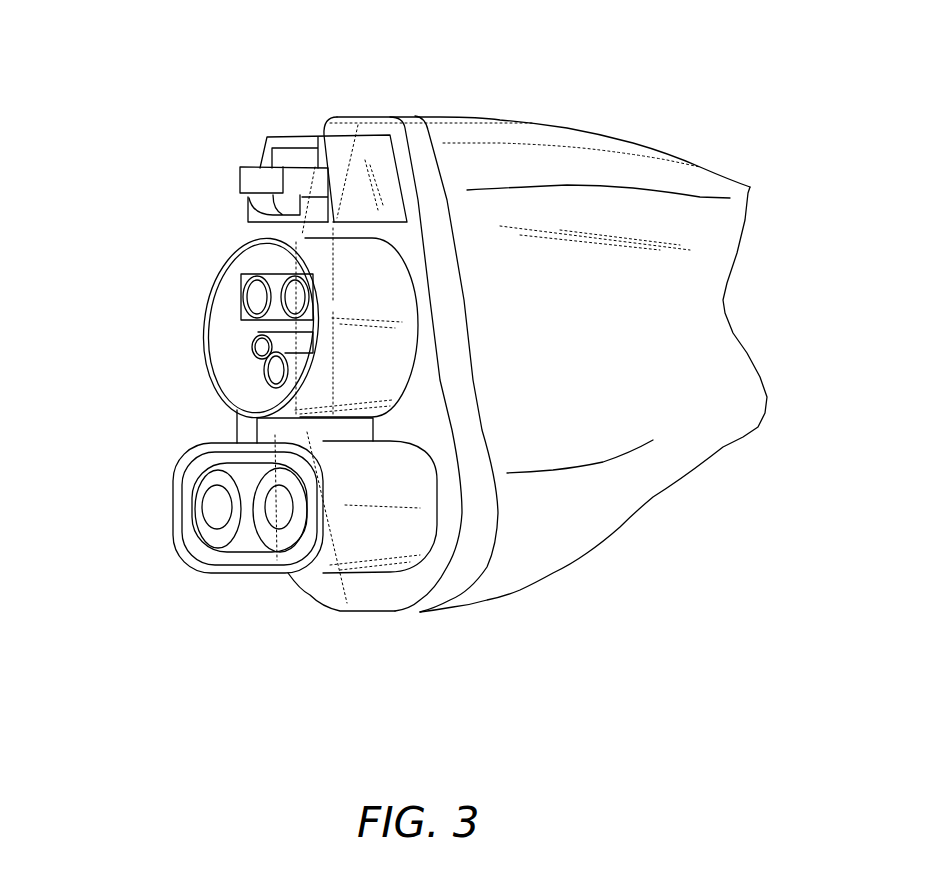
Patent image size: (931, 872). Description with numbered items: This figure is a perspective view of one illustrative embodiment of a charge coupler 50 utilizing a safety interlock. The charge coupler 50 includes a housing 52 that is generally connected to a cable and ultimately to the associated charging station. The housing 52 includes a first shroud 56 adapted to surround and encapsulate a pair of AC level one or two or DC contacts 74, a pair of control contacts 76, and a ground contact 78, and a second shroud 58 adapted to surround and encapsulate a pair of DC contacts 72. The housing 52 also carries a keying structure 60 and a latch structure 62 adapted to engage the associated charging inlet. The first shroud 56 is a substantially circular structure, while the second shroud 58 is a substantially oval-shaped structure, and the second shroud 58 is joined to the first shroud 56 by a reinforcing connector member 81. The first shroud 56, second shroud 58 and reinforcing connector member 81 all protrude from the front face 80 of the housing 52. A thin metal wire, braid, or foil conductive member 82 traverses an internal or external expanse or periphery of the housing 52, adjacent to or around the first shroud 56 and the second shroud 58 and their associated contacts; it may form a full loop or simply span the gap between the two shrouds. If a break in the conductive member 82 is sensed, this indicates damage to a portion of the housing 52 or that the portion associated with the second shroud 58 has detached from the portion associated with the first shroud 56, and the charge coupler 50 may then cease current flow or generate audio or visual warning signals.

The charge coupler 50 is at (593, 101).
The housing 52 is at (503, 96).
The first shroud 56 is at (172, 326).
The second shroud 58 is at (159, 463).
The keying structure 60 is at (289, 110).
The latch structure 62 is at (249, 152).
The pair of DC contacts 72 is at (176, 502).
The pair of AC level 1 or 2 or DC contacts 74 is at (228, 276).
The pair of control contacts 76 is at (242, 341).
The ground contact 78 is at (247, 368).
The front face 80 is at (409, 590).
The reinforcing connector member 81 is at (222, 421).
The conductive member 82 is at (498, 563).